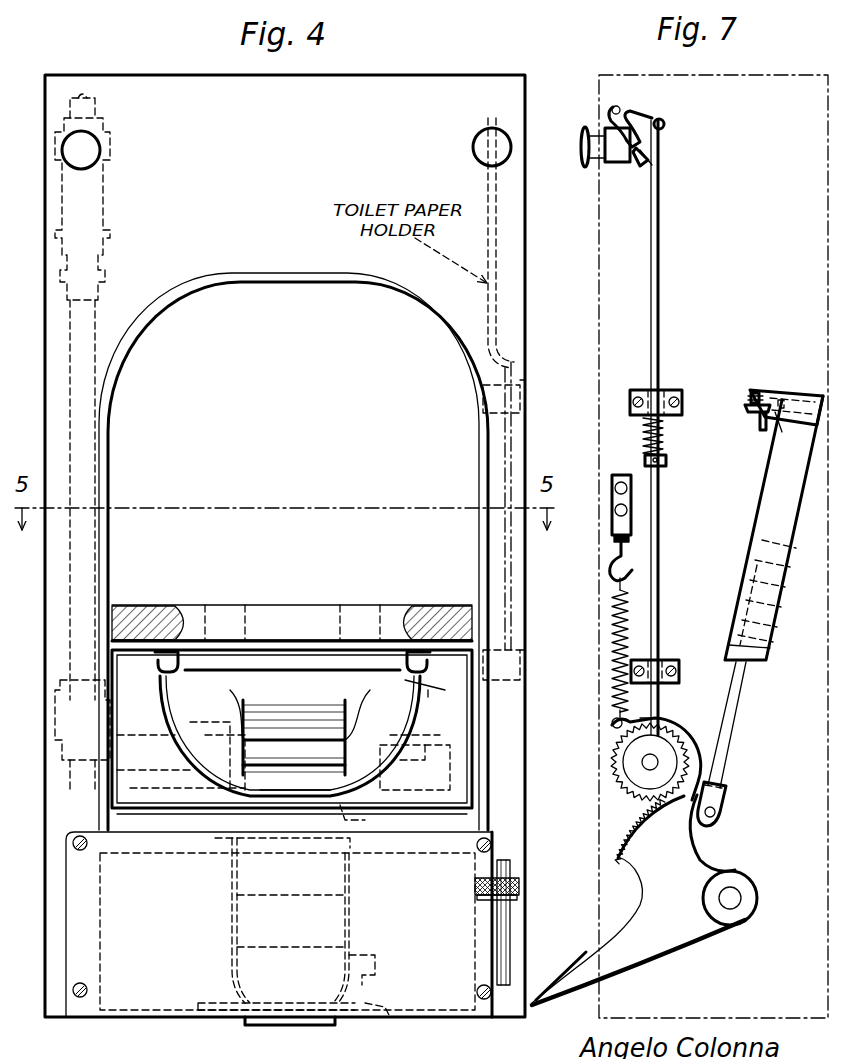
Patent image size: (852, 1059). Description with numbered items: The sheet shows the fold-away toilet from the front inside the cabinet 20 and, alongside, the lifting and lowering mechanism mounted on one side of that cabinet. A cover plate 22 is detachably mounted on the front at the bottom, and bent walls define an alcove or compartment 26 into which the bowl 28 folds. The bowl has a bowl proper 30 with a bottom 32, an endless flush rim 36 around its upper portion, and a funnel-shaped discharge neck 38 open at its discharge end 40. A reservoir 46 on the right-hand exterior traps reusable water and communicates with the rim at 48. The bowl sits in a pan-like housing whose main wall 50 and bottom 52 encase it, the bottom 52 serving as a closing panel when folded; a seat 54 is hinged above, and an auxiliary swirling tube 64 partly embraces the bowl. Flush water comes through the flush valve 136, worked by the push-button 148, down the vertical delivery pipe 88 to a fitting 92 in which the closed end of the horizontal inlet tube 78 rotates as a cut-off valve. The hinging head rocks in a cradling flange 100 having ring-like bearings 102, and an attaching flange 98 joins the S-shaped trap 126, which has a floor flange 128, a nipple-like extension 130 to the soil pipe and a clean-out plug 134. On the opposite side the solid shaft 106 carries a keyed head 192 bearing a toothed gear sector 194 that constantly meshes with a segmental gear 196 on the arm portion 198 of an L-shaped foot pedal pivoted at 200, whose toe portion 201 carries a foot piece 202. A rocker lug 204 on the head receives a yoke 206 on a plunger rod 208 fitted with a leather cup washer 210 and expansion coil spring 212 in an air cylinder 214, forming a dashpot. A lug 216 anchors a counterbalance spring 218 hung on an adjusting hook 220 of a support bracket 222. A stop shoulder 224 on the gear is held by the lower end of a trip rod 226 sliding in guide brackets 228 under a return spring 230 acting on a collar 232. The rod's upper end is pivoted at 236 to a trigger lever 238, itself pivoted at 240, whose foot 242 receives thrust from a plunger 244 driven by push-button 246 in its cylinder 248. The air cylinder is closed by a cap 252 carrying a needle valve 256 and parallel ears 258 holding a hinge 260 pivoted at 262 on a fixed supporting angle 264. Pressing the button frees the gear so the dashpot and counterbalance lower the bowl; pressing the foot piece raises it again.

In FIG. 4, the cabinet 20 is at (410, 72).
In FIG. 7, the cabinet 20 is at (752, 72).
In FIG. 4, the cover plate 22 is at (138, 992).
In FIG. 4, the alcove or compartment 26 is at (484, 449).
In FIG. 4, the bowl 28 is at (157, 700).
In FIG. 4, the bowl proper 30 is at (175, 722).
In FIG. 4, the bottom 32 is at (290, 795).
In FIG. 4, the flush rim or ring 36 is at (310, 660).
In FIG. 4, the discharge neck 38 is at (258, 762).
In FIG. 4, the discharge end 40 is at (272, 796).
In FIG. 4, the reservoir 46 is at (437, 740).
In FIG. 4, the communication 48 is at (422, 684).
In FIG. 4, the main rim or wall 50 is at (118, 718).
In FIG. 4, the bottom 52 is at (162, 838).
In FIG. 4, the seat 54 is at (150, 605).
In FIG. 4, the auxiliary water swirling tube 64 is at (165, 811).
In FIG. 4, the water inlet shaft or tube 78 is at (162, 777).
In FIG. 4, the vertical water delivery pipe 88 is at (98, 305).
In FIG. 4, the fitting 92 is at (75, 780).
In FIG. 4, the attaching flange 98 is at (368, 822).
In FIG. 4, the cradling or adaptor flange 100 is at (200, 759).
In FIG. 4, the ring-like bearings 102 is at (200, 692).
In FIG. 4, the solid shaft 106 is at (405, 772).
In FIG. 7, the solid shaft 106 is at (648, 762).
In FIG. 4, the S-shaped trap 126 is at (360, 905).
In FIG. 4, the floor flange 128 is at (396, 1013).
In FIG. 4, the nipple-like extension 130 is at (334, 1026).
In FIG. 4, the clean-out plug 134 is at (378, 960).
In FIG. 4, the flush valve 136 is at (110, 188).
In FIG. 4, the flush valve push-button 148 is at (98, 148).
In FIG. 7, the head 192 is at (680, 752).
In FIG. 7, the toothed gear sector 194 is at (617, 787).
In FIG. 7, the segmental gear 196 is at (620, 845).
In FIG. 7, the arm portion 198 is at (700, 858).
In FIG. 7, the pivot 200 is at (735, 895).
In FIG. 4, the extended arm or toe portion 201 is at (500, 912).
In FIG. 7, the extended arm or toe portion 201 is at (655, 958).
In FIG. 4, the foot piece 202 is at (476, 885).
In FIG. 7, the foot piece 202 is at (585, 958).
In FIG. 7, the lug or rocker arm 204 is at (735, 762).
In FIG. 7, the yoke 206 is at (724, 800).
In FIG. 7, the plunger rod 208 is at (742, 708).
In FIG. 7, the leather cup washer 210 is at (762, 545).
In FIG. 7, the expansion coil spring 212 is at (750, 572).
In FIG. 7, the air cylinder 214 is at (768, 478).
In FIG. 7, the lug 216 is at (611, 722).
In FIG. 7, the counterbalanced coil spring 218 is at (612, 640).
In FIG. 7, the adjusting hook 220 is at (612, 552).
In FIG. 7, the support bracket 222 is at (611, 505).
In FIG. 7, the stop shoulder 224 is at (662, 722).
In FIG. 4, the trigger or trip rod 226 is at (497, 238).
In FIG. 7, the trigger or trip rod 226 is at (661, 158).
In FIG. 4, the guide brackets 228 is at (521, 396).
In FIG. 7, the guide brackets 228 is at (658, 392).
In FIG. 7, the return spring 230 is at (666, 437).
In FIG. 7, the collar 232 is at (666, 462).
In FIG. 7, the pivotal connection 236 is at (664, 122).
In FIG. 7, the trigger lever 238 is at (638, 116).
In FIG. 7, the pivot 240 is at (616, 106).
In FIG. 7, the foot 242 is at (645, 155).
In FIG. 7, the plunger 244 is at (646, 147).
In FIG. 4, the push-button 246 is at (483, 153).
In FIG. 7, the push-button 246 is at (582, 140).
In FIG. 7, the cylinder 248 is at (620, 163).
In FIG. 4, the cap 252 is at (276, 946).
In FIG. 7, the cap 252 is at (800, 388).
In FIG. 7, the needle valve 256 is at (753, 392).
In FIG. 7, the ears 258 is at (776, 420).
In FIG. 7, the hinge 260 is at (752, 410).
In FIG. 7, the pivot 262 is at (782, 412).
In FIG. 7, the supporting angle 264 is at (760, 422).